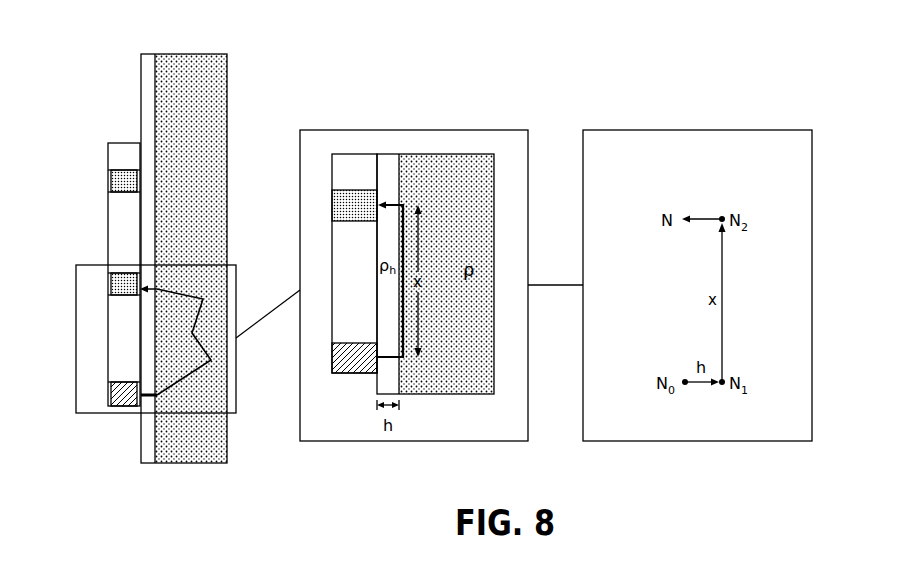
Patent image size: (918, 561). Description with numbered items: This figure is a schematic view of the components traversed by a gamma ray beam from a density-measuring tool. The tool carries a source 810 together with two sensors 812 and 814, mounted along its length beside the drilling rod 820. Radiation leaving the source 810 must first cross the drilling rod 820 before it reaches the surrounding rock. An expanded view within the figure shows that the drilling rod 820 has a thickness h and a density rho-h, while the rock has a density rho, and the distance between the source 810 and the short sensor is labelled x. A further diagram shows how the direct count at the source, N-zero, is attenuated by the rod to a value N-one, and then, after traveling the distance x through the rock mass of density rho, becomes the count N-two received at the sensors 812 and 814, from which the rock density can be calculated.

The source 810 is at (108, 393).
The sensor 812 is at (108, 291).
The sensor 814 is at (110, 173).
The drilling rod 820 is at (149, 129).